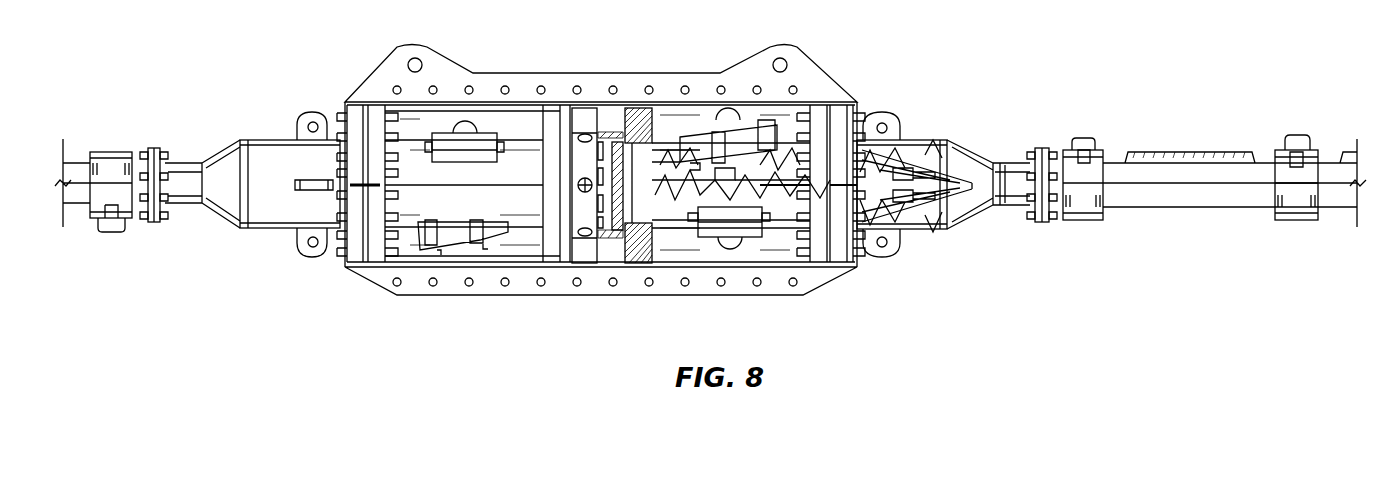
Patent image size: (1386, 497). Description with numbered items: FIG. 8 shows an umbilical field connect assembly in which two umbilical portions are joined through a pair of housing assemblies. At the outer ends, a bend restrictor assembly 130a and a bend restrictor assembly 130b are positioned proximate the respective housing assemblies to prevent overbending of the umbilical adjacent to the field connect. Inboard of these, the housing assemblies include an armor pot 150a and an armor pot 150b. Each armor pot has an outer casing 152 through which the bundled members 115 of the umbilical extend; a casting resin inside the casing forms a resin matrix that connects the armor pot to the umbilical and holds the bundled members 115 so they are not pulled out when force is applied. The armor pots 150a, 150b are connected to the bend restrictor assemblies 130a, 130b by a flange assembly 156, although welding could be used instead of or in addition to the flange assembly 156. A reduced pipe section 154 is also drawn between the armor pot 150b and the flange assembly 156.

The bend restrictor assembly 130a is at (80, 157).
The bend restrictor assembly 130b is at (1327, 157).
The flange assembly 156 is at (153, 149).
The armor pot 150a is at (222, 221).
The armor pot 150b is at (973, 222).
The outer casing 152 is at (922, 138).
The reduced pipe section 154 is at (1008, 160).
The bundled members 115 is at (922, 204).